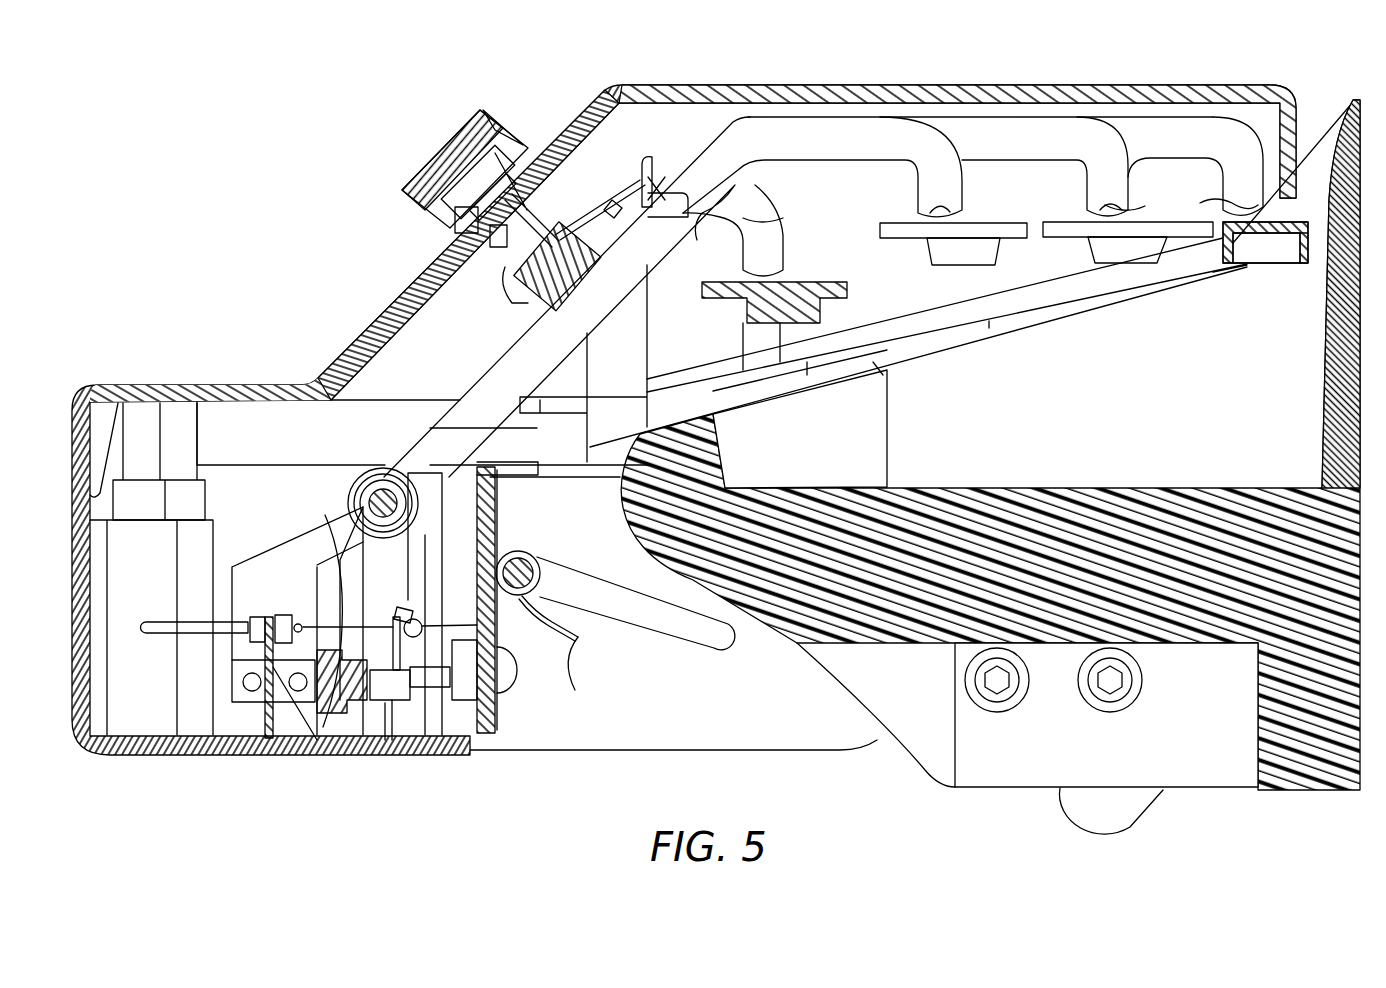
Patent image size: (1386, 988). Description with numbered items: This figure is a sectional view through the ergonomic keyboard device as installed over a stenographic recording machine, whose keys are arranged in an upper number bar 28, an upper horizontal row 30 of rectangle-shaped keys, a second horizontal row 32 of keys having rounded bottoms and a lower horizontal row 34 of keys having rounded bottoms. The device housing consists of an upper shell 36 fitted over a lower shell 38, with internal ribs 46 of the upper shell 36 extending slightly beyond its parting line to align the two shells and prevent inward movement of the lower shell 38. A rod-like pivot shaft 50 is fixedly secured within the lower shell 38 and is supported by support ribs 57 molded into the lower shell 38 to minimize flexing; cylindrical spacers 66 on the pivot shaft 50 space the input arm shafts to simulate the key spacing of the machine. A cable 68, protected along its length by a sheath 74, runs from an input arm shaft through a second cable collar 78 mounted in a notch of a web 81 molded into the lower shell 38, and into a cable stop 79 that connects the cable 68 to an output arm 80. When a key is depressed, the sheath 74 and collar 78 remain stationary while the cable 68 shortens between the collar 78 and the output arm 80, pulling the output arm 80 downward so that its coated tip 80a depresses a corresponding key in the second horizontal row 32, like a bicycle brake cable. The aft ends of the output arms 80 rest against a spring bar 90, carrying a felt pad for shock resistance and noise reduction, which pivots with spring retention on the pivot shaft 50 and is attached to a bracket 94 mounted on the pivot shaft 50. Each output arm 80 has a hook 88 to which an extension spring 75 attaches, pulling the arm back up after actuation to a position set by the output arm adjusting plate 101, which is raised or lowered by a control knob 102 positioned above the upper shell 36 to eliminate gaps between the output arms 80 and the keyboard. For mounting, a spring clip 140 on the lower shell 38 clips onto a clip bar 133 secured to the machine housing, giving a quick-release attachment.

The upper number bar 28 is at (1303, 262).
The upper horizontal row 30 is at (1134, 250).
The second horizontal row 32 is at (1000, 262).
The lower horizontal row 34 is at (847, 290).
The upper shell 36 is at (622, 92).
The lower shell 38 is at (95, 537).
The internal ribs 46 is at (100, 405).
The pivot shaft 50 is at (388, 488).
The support ribs 57 is at (380, 565).
The cylindrical spacers 66 is at (362, 492).
The cable 68 is at (340, 590).
The sheath 74 is at (200, 630).
The extension spring 75 is at (688, 185).
The second cable collar 78 is at (255, 628).
The cable stop 79 is at (422, 597).
The output arm 80 is at (1195, 130).
The tip 80a is at (1235, 210).
The web 81 is at (268, 715).
The hook 88 is at (733, 233).
The spring bar 90 is at (328, 705).
The bracket 94 is at (325, 515).
The output arm adjusting plate 101 is at (497, 300).
The control knob 102 is at (465, 135).
The clip bar 133 is at (698, 640).
The spring clip 140 is at (597, 677).